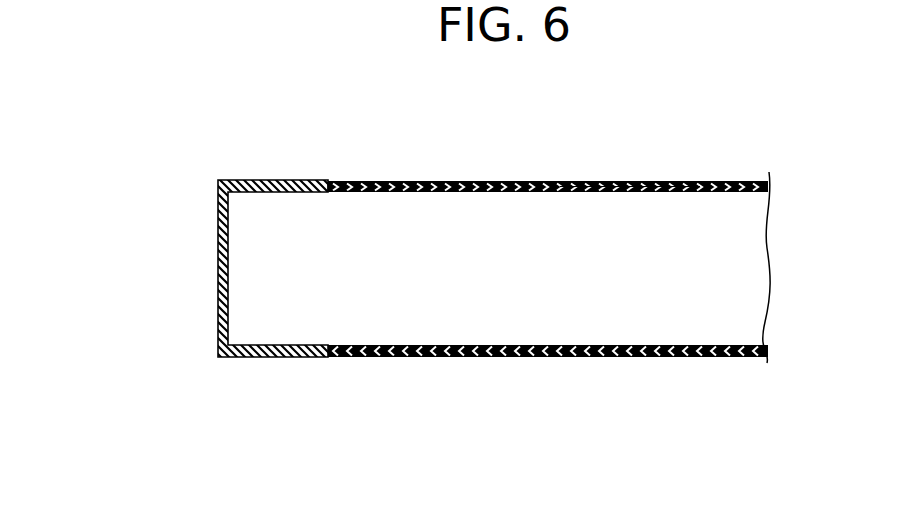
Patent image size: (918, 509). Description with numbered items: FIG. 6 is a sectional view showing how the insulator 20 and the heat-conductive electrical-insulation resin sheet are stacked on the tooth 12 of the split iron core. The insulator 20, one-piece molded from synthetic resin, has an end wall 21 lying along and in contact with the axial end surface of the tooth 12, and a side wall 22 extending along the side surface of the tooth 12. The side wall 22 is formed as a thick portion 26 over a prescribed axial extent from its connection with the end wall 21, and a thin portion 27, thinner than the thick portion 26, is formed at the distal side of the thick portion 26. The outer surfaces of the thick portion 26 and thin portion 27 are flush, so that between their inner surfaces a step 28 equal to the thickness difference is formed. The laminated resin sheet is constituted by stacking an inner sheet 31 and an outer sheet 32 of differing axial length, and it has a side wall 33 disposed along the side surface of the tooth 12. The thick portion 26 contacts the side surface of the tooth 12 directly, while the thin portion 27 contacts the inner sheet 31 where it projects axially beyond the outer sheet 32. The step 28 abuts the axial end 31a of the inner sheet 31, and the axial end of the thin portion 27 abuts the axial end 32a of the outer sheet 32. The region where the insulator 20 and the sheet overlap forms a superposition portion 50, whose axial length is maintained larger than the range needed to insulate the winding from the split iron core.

The tooth 12 is at (590, 320).
The insulator 20 is at (206, 259).
The end wall 21 is at (217, 242).
The side wall 22 is at (262, 358).
The thick portion 26 is at (270, 179).
The thin portion 27 is at (358, 180).
The step 28 is at (328, 193).
The inner sheet 31 is at (595, 193).
The axial end of inner sheet 31a is at (333, 193).
The outer sheet 32 is at (615, 180).
The axial end of outer sheet 32a is at (427, 180).
The side wall of resin sheet 33 is at (685, 180).
The superposition portion 50 is at (382, 366).